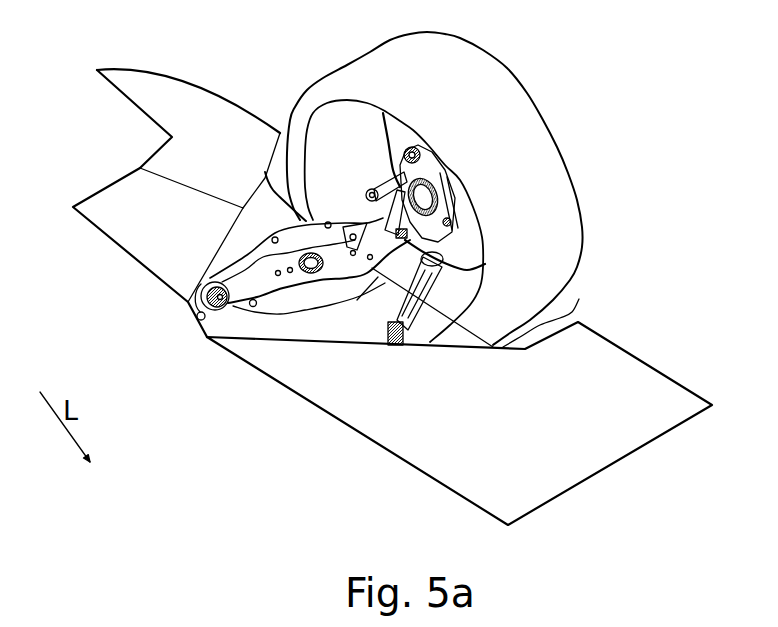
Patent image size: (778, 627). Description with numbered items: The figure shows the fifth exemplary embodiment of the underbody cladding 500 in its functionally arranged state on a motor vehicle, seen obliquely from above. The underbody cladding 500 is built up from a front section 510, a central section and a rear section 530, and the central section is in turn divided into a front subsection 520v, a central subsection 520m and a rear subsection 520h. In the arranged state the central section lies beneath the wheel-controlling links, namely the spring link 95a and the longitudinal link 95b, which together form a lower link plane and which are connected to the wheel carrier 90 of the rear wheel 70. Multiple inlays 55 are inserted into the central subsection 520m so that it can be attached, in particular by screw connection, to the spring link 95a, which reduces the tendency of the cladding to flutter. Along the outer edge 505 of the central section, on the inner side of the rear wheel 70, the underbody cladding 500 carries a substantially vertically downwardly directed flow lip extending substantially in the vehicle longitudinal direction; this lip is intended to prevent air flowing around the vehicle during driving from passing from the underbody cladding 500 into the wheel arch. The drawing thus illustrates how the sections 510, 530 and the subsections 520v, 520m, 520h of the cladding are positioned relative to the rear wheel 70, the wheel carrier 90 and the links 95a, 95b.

The underbody cladding 500 is at (645, 352).
The front section 510 is at (530, 459).
The rear section 530 is at (227, 151).
The outer edge 505 is at (265, 172).
The rear wheel 70 is at (510, 166).
The wheel carrier 90 is at (405, 148).
The spring link 95a is at (298, 218).
The longitudinal link 95b is at (440, 277).
The inlays 55 is at (282, 290).
The rear subsection 520h is at (205, 262).
The central subsection 520m is at (198, 318).
The front subsection 520v is at (252, 305).